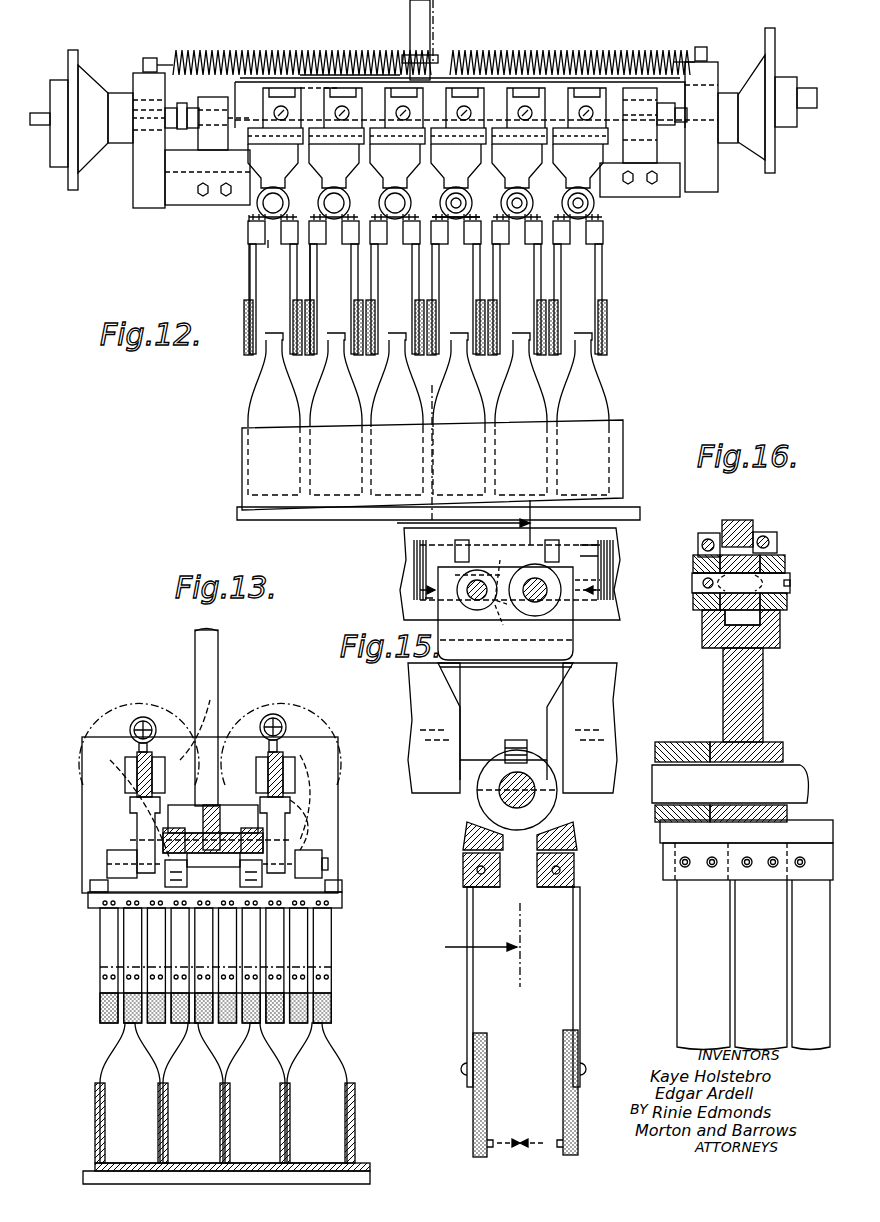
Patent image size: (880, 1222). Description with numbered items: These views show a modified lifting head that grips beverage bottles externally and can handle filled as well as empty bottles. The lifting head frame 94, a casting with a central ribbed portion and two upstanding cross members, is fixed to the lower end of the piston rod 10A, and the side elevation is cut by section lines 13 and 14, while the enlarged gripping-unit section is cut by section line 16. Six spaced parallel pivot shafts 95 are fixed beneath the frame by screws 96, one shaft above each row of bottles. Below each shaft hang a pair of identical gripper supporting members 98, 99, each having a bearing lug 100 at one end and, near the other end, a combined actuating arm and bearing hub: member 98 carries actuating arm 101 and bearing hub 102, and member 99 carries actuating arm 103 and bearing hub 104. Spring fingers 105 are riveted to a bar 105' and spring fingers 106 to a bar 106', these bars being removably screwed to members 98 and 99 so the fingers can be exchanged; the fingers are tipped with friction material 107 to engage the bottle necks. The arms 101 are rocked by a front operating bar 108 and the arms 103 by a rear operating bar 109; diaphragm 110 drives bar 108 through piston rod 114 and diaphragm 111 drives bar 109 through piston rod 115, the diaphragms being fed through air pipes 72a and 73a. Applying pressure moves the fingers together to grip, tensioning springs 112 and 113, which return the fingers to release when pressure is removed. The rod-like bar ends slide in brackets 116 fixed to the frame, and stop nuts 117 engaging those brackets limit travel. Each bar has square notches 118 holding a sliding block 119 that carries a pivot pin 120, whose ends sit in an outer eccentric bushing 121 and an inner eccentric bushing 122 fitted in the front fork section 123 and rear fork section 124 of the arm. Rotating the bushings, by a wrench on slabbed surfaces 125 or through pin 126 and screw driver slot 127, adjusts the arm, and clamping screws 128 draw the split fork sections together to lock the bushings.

In FIG. 12, the piston rod 10A is at (412, 16).
In FIG. 13, the piston rod 10A is at (216, 660).
In FIG. 12, the section line 13— 13 is at (472, 20).
In FIG. 12, the section line 14— 14 is at (75, 45).
In FIG. 12, the section line 16— 16 is at (451, 522).
In FIG. 15, the section line 16— 16 is at (471, 945).
In FIG. 12, the air pipe 72a is at (812, 108).
In FIG. 12, the air pipe 73a is at (40, 130).
In FIG. 12, the lifting head frame 94 is at (150, 205).
In FIG. 13, the lifting head frame 94 is at (222, 810).
In FIG. 15, the lifting head frame 94 is at (615, 725).
In FIG. 12, the pivot shaft 95 is at (578, 200).
In FIG. 13, the pivot shaft 95 is at (322, 866).
In FIG. 15, the pivot shaft 95 is at (500, 786).
In FIG. 16, the pivot shaft 95 is at (805, 765).
In FIG. 13, the screw 96 is at (236, 864).
In FIG. 15, the screw 96 is at (530, 766).
In FIG. 12, the gripper supporting member 98 is at (422, 240).
In FIG. 13, the gripper supporting member 98 is at (342, 895).
In FIG. 15, the gripper supporting member 98 is at (570, 836).
In FIG. 16, the gripper supporting member 98 is at (800, 826).
In FIG. 12, the gripper supporting member 99 is at (375, 235).
In FIG. 15, the gripper supporting member 99 is at (470, 833).
In FIG. 13, the bearing lug 100 is at (107, 860).
In FIG. 16, the bearing lug 100 is at (660, 742).
In FIG. 13, the actuating arm 101 is at (300, 820).
In FIG. 15, the actuating arm 101 is at (460, 596).
In FIG. 13, the bearing hub 102 is at (292, 832).
In FIG. 15, the bearing hub 102 is at (560, 806).
In FIG. 12, the actuating arm 103 is at (425, 180).
In FIG. 13, the actuating arm 103 is at (135, 820).
In FIG. 15, the actuating arm 103 is at (573, 648).
In FIG. 16, the actuating arm 103 is at (733, 672).
In FIG. 13, the bearing hub 104 is at (137, 840).
In FIG. 15, the bearing hub 104 is at (497, 766).
In FIG. 16, the bearing hub 104 is at (712, 746).
In FIG. 12, the spring finger 105 is at (452, 299).
In FIG. 13, the spring finger 105 is at (236, 962).
In FIG. 15, the spring finger 105 is at (600, 987).
In FIG. 16, the spring finger 105 is at (728, 965).
In FIG. 15, the bar 105' is at (581, 890).
In FIG. 16, the bar 105' is at (729, 879).
In FIG. 12, the spring finger 106 is at (283, 299).
In FIG. 15, the spring finger 106 is at (445, 987).
In FIG. 15, the bar 106' is at (451, 891).
In FIG. 12, the friction material tip 107 is at (300, 312).
In FIG. 13, the friction material tip 107 is at (333, 1006).
In FIG. 15, the friction material tip 107 is at (565, 1113).
In FIG. 12, the operating bar 108 is at (600, 50).
In FIG. 13, the operating bar 108 is at (160, 745).
In FIG. 15, the operating bar 108 is at (592, 540).
In FIG. 16, the operating bar 108 is at (740, 520).
In FIG. 12, the operating bar 109 is at (252, 52).
In FIG. 13, the operating bar 109 is at (286, 760).
In FIG. 15, the operating bar 109 is at (612, 557).
In FIG. 12, the fluid pressure diaphragm 110 is at (772, 62).
In FIG. 13, the fluid pressure diaphragm 110 is at (108, 722).
In FIG. 12, the fluid pressure diaphragm 111 is at (88, 85).
In FIG. 13, the fluid pressure diaphragm 111 is at (322, 770).
In FIG. 12, the spring 112 is at (564, 46).
In FIG. 13, the spring 112 is at (146, 718).
In FIG. 12, the spring 113 is at (283, 52).
In FIG. 13, the spring 113 is at (279, 714).
In FIG. 12, the piston rod 114 is at (677, 100).
In FIG. 12, the piston rod 115 is at (192, 100).
In FIG. 12, the supporting bracket 116 is at (205, 155).
In FIG. 12, the stop nut 117 is at (195, 140).
In FIG. 12, the notch 118 is at (296, 95).
In FIG. 16, the notch 118 is at (758, 530).
In FIG. 12, the block 119 is at (306, 102).
In FIG. 15, the block 119 is at (512, 612).
In FIG. 16, the block 119 is at (761, 606).
In FIG. 13, the pivot pin 120 is at (125, 785).
In FIG. 15, the pivot pin 120 is at (478, 598).
In FIG. 16, the pivot pin 120 is at (770, 580).
In FIG. 13, the outer eccentric bushing 121 is at (125, 758).
In FIG. 15, the outer eccentric bushing 121 is at (575, 665).
In FIG. 16, the outer eccentric bushing 121 is at (787, 601).
In FIG. 13, the inner eccentric bushing 122 is at (212, 780).
In FIG. 15, the inner eccentric bushing 122 is at (470, 590).
In FIG. 16, the inner eccentric bushing 122 is at (700, 568).
In FIG. 16, the front fork section 123 is at (785, 560).
In FIG. 16, the rear fork section 124 is at (706, 538).
In FIG. 15, the slabbed surface 125 is at (612, 582).
In FIG. 16, the pin 126 is at (704, 587).
In FIG. 15, the screw driver slot 127 is at (622, 598).
In FIG. 16, the screw driver slot 127 is at (790, 584).
In FIG. 15, the clamping screw 128 is at (416, 548).
In FIG. 16, the clamping screw 128 is at (789, 522).